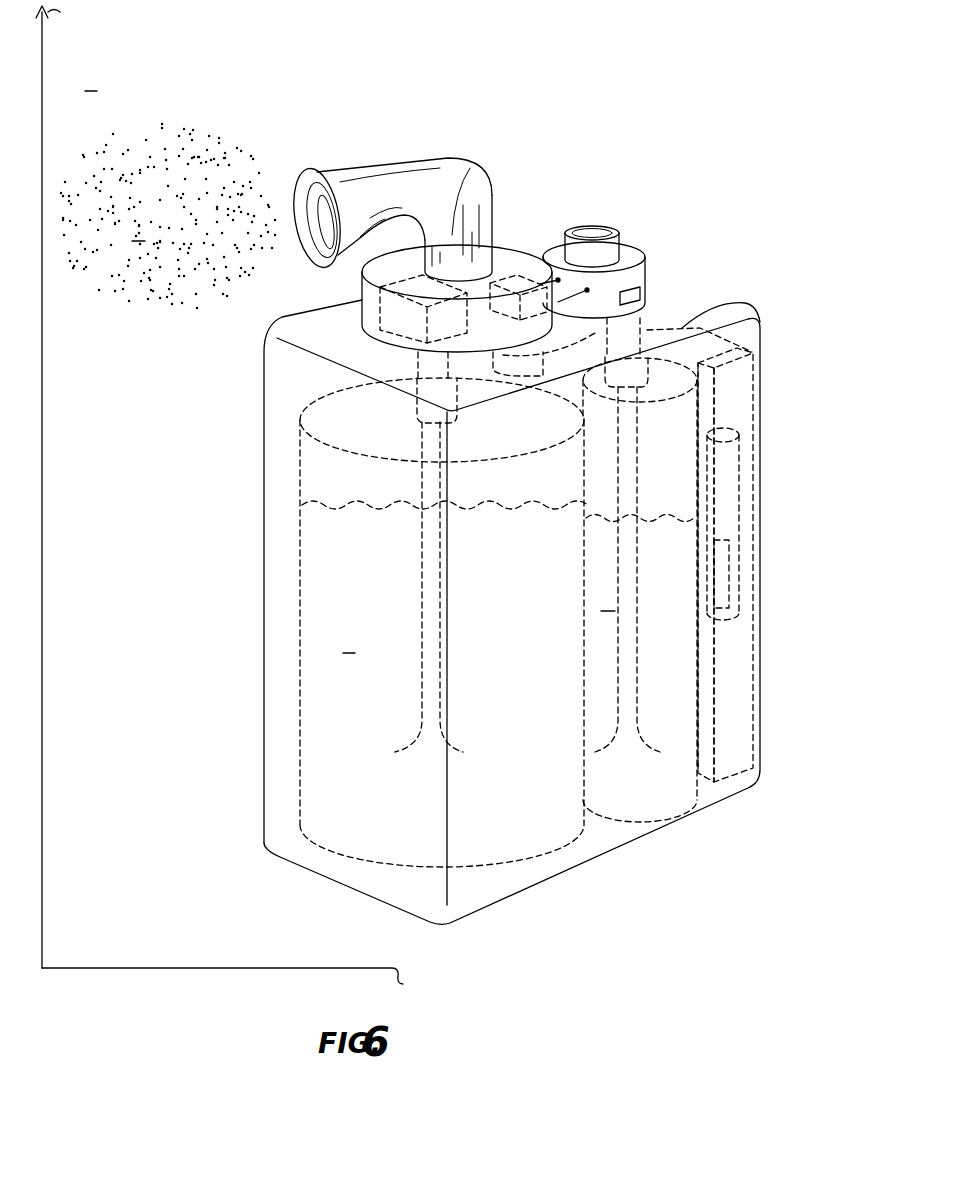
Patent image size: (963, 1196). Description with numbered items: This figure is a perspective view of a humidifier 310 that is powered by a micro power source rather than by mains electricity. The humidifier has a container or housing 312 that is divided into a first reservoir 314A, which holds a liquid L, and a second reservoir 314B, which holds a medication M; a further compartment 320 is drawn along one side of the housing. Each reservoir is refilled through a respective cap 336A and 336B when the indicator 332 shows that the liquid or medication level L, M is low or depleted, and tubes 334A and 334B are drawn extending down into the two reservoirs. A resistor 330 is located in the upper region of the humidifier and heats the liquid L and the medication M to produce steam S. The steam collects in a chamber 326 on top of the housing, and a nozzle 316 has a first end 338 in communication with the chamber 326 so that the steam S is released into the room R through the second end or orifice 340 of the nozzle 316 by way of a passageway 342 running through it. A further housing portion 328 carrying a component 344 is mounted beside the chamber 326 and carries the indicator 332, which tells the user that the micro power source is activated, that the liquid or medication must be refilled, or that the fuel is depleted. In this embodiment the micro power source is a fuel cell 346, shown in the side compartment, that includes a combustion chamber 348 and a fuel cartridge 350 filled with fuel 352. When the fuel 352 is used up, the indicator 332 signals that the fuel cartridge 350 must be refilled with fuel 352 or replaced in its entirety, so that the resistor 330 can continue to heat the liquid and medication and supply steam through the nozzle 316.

The dispensing system 310 is at (566, 84).
The container 312 is at (230, 700).
The first reservoir 314A is at (535, 807).
The second reservoir 314B is at (635, 790).
The nozzle 316 is at (386, 166).
The third compartment 320 is at (742, 672).
The chamber 326 is at (385, 303).
The pump housing 328 is at (620, 250).
The resistor 330 is at (515, 272).
The indicator 332 is at (633, 297).
The first dip tube 334A is at (450, 480).
The second dip tube 334B is at (633, 490).
The cap 336A is at (417, 438).
The cap 336B is at (610, 405).
The first end of nozzle 338 is at (472, 202).
The second end or orifice 340 is at (300, 185).
The passageway 342 is at (372, 208).
The pump actuator 344 is at (590, 243).
The fuel cell 346 is at (750, 563).
The combustion chamber 348 is at (742, 548).
The fuel cartridge 350 is at (737, 447).
The fuel 352 is at (727, 592).